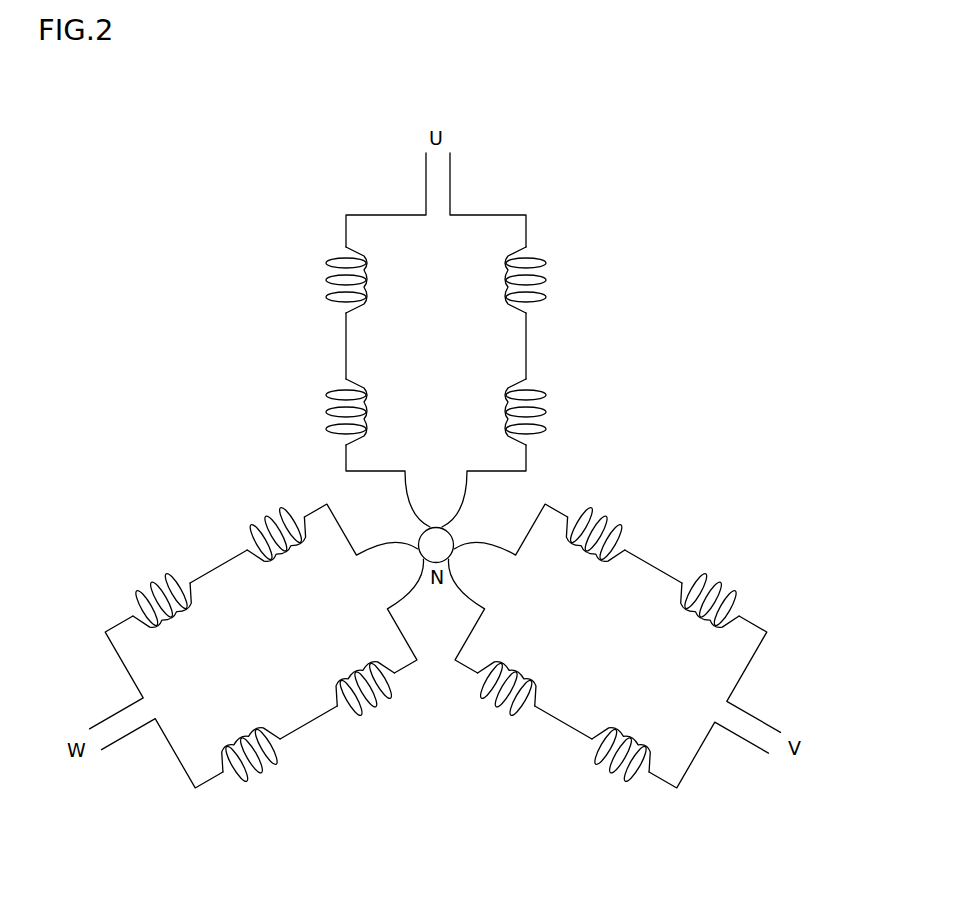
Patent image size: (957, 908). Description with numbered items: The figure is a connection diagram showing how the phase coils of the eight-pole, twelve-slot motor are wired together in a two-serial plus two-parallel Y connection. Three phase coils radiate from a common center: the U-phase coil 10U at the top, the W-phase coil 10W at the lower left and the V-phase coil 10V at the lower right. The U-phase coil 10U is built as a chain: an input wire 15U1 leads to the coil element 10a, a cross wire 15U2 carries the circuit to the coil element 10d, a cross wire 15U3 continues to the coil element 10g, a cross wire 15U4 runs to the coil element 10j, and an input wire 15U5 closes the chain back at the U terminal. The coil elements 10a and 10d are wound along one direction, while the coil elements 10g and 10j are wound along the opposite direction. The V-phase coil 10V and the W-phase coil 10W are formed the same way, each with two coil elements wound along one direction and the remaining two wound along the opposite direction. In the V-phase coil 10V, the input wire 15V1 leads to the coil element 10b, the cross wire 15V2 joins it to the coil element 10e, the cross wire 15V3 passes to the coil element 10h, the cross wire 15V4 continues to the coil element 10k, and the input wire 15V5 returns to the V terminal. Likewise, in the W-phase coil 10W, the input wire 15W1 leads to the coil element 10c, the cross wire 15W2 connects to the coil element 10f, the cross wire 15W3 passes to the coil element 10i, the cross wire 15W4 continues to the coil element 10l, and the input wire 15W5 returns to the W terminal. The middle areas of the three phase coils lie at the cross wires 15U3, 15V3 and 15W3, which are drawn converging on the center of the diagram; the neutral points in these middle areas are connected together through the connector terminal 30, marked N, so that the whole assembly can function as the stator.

The connector terminal 30 is at (419, 538).
The U-phase coil 10U is at (506, 172).
The V-phase coil 10V is at (716, 814).
The W-phase coil 10W is at (123, 808).
The coil element 10a is at (548, 290).
The coil element 10b is at (620, 777).
The coil element 10c is at (140, 583).
The coil element 10d is at (548, 415).
The coil element 10e is at (500, 708).
The coil element 10f is at (267, 516).
The coil element 10g is at (327, 415).
The coil element 10h is at (607, 518).
The coil element 10i is at (365, 712).
The coil element 10j is at (327, 290).
The coil element 10k is at (720, 580).
The coil element 10l is at (262, 773).
The input wire 15U1 is at (449, 191).
The cross wire 15U2 is at (527, 345).
The cross wire 15U3 is at (468, 492).
The cross wire 15U4 is at (347, 345).
The input wire 15U5 is at (425, 190).
The input wire 15V1 is at (737, 735).
The cross wire 15V2 is at (558, 722).
The cross wire 15V3 is at (481, 542).
The cross wire 15V4 is at (653, 565).
The input wire 15V5 is at (757, 710).
The input wire 15W1 is at (123, 670).
The cross wire 15W2 is at (212, 570).
The cross wire 15W3 is at (407, 596).
The cross wire 15W4 is at (305, 725).
The input wire 15W5 is at (177, 765).